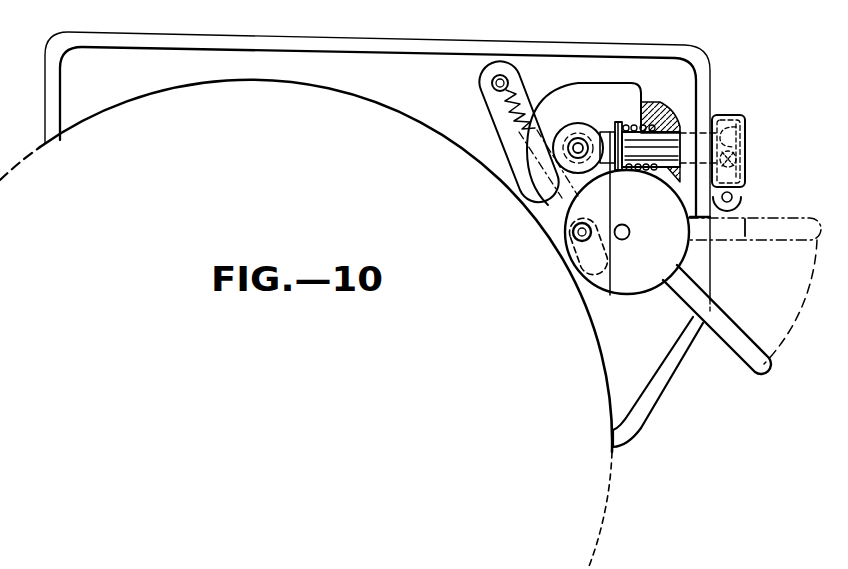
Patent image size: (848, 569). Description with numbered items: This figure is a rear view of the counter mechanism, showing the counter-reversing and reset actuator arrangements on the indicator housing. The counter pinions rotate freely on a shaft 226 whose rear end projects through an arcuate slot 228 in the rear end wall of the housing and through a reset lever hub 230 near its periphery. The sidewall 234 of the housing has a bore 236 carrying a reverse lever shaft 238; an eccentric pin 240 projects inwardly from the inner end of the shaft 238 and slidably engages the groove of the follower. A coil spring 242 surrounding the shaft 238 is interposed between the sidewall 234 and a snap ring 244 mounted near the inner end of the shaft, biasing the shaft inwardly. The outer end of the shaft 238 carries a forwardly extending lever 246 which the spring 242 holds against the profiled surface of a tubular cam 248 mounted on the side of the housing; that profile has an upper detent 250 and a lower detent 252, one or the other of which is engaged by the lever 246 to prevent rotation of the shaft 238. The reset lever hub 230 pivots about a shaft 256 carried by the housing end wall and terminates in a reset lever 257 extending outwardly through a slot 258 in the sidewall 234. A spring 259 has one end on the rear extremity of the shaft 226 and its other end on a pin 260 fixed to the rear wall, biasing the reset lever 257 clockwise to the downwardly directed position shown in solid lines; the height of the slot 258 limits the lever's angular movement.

The shaft 226 is at (566, 238).
The arcuate slot 228 is at (566, 259).
The reset lever hub 230 is at (583, 283).
The sidewall 234 is at (712, 97).
The bore 236 is at (682, 132).
The reverse lever shaft 238 is at (658, 135).
The eccentric pin 240 is at (592, 126).
The coil spring 242 is at (623, 130).
The snap ring 244 is at (613, 122).
The lever 246 is at (742, 192).
The tubular cam 248 is at (745, 125).
The upper detent 250 is at (748, 140).
The lower detent 252 is at (747, 159).
The shaft 256 is at (629, 241).
The reset lever 257 is at (728, 233).
The slot 258 is at (707, 273).
The spring 259 is at (498, 110).
The pin 260 is at (492, 84).